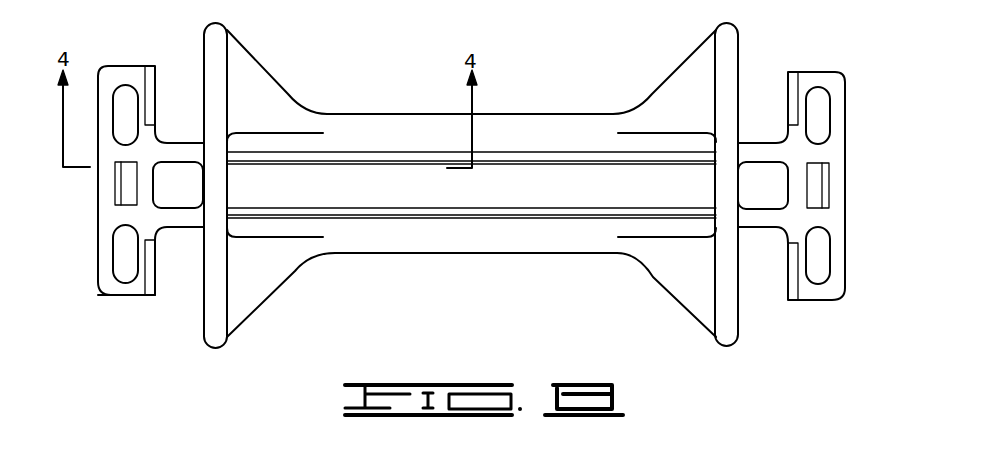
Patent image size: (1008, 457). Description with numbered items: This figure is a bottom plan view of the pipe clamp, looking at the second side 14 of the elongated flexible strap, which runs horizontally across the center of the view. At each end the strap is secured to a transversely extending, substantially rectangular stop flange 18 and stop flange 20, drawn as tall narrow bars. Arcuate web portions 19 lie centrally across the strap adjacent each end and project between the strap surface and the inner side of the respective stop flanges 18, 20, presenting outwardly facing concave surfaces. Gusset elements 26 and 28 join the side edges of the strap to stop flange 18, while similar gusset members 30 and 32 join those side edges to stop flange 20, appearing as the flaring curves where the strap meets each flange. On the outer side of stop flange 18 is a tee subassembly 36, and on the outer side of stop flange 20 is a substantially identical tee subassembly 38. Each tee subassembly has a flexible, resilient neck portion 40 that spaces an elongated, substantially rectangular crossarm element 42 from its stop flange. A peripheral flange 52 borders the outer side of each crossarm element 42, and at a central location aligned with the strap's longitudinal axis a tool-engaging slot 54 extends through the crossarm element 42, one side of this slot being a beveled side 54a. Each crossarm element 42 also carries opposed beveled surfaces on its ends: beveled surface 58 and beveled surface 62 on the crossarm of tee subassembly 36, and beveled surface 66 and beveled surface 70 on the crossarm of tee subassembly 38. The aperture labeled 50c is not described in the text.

The second side 14 is at (523, 195).
The stop flange 18 is at (212, 298).
The arcuate web portions 19 is at (271, 118).
The stop flange 20 is at (742, 337).
The gusset element 26 is at (250, 72).
The gusset element 28 is at (255, 294).
The gusset member 30 is at (698, 77).
The gusset member 32 is at (695, 294).
The tee subassembly 36 is at (90, 252).
The tee subassembly 38 is at (860, 143).
The neck portion 40 is at (163, 130).
The crossarm element 42 is at (107, 56).
The aperture 50c is at (149, 190).
The peripheral flange 52 is at (115, 290).
The tool-engaging slot 54 is at (116, 196).
The beveled side 54a is at (817, 200).
The beveled surface 58 is at (152, 76).
The beveled surface 62 is at (152, 264).
The beveled surface 66 is at (788, 82).
The beveled surface 70 is at (785, 290).